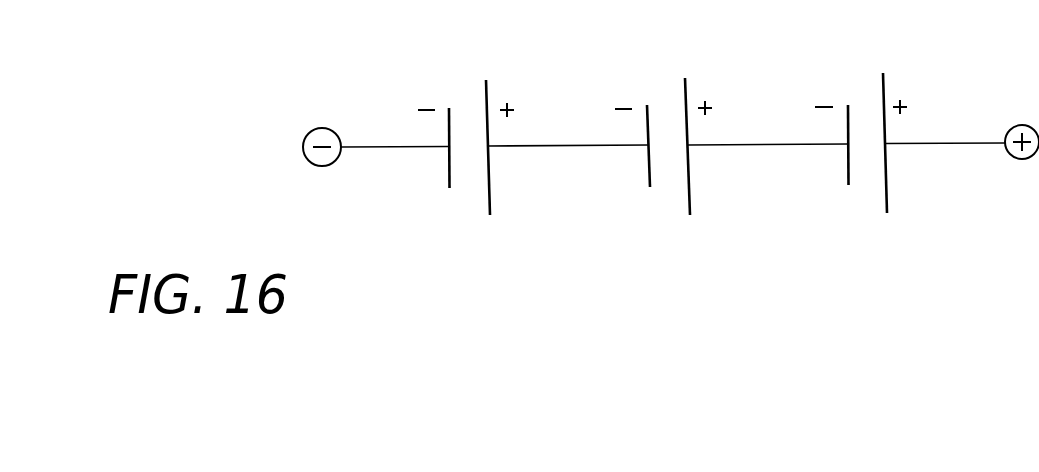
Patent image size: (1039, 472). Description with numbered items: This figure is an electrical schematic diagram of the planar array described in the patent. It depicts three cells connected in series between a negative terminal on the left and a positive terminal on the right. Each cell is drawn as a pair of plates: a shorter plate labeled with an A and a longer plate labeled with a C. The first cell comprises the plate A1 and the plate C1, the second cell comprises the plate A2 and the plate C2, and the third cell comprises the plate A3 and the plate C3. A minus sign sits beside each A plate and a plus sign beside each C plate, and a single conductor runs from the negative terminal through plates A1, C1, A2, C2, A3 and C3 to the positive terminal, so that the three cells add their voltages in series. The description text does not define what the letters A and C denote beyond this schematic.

The anode of first cell A1 is at (453, 175).
The cathode of first cell C1 is at (490, 123).
The anode of second cell A2 is at (653, 173).
The cathode of second cell C2 is at (692, 122).
The anode of third cell A3 is at (853, 171).
The cathode of third cell C3 is at (892, 119).